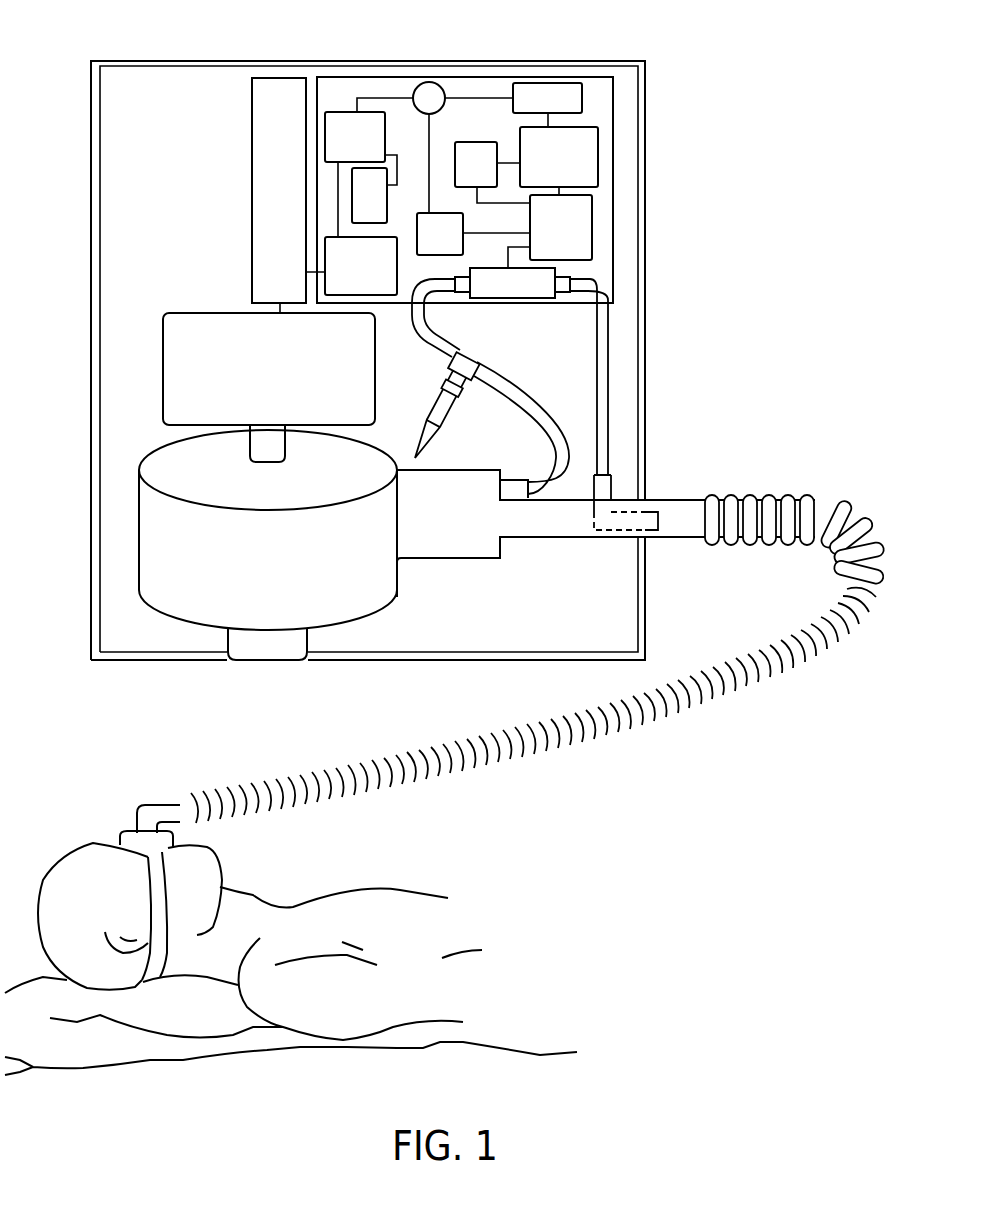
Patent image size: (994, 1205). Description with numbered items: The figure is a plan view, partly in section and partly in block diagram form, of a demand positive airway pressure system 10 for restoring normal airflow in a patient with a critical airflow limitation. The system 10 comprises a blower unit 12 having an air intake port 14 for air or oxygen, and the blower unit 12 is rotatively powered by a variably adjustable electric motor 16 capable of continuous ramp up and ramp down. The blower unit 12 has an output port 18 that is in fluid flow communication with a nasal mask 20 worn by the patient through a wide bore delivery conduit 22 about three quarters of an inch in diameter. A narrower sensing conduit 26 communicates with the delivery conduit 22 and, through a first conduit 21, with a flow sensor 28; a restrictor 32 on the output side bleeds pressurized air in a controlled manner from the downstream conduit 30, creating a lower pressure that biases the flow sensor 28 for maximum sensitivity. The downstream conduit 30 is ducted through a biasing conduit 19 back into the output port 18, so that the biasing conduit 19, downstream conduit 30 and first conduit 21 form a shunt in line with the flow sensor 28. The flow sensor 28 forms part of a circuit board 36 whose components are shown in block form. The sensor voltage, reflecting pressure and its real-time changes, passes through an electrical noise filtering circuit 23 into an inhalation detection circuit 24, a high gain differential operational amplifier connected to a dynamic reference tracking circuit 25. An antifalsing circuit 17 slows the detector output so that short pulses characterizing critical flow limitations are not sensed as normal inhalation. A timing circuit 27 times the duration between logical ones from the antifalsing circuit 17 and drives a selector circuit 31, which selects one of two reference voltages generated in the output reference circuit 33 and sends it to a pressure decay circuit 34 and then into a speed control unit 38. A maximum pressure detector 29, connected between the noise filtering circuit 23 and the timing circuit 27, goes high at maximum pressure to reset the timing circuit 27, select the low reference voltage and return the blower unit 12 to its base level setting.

The demand positive airway pressure system 10 is at (131, 60).
The blower unit 12 is at (158, 609).
The air intake port 14 is at (268, 648).
The variably adjustable electric motor 16 is at (163, 364).
The antifalsing circuit 17 is at (547, 97).
The output port 18 is at (466, 560).
The biasing conduit 19 is at (541, 406).
The nasal mask 20 is at (130, 832).
The first conduit 21 is at (594, 433).
The wide bore delivery conduit 22 is at (837, 507).
The electrical noise filtering circuit 23 is at (561, 227).
The inhalation detection circuit 24 is at (559, 157).
The dynamic reference tracking circuit 25 is at (476, 164).
The sensing conduit 26 is at (657, 511).
The timing circuit 27 is at (443, 110).
The flow sensor 28 is at (524, 300).
The maximum pressure detector 29 is at (440, 234).
The downstream conduit 30 is at (430, 346).
The selector circuit 31 is at (355, 137).
The restrictor 32 is at (433, 437).
The output reference circuit 33 is at (369, 195).
The pressure decay circuit 34 is at (361, 266).
The circuit board 36 is at (613, 208).
The speed control unit 38 is at (252, 203).